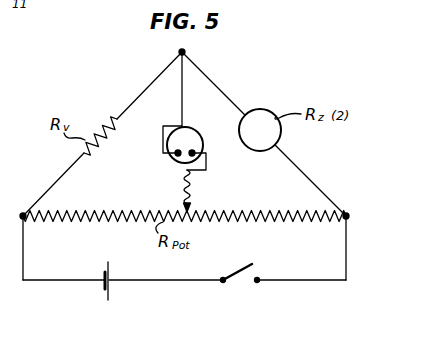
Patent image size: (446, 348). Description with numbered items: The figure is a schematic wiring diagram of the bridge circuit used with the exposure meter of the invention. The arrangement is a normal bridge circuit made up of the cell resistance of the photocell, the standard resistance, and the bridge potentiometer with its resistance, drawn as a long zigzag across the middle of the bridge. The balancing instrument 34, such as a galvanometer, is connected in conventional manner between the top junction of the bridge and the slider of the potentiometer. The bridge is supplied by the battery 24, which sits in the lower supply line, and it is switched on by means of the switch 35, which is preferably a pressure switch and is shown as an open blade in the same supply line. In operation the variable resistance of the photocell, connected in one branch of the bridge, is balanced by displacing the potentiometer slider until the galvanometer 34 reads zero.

The balancing instrument 34 is at (198, 136).
The battery 24 is at (108, 292).
The switch 35 is at (234, 283).